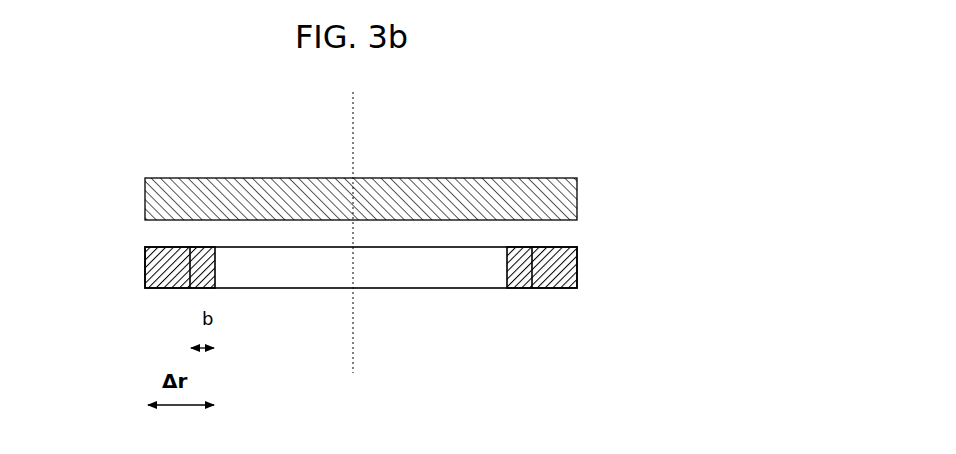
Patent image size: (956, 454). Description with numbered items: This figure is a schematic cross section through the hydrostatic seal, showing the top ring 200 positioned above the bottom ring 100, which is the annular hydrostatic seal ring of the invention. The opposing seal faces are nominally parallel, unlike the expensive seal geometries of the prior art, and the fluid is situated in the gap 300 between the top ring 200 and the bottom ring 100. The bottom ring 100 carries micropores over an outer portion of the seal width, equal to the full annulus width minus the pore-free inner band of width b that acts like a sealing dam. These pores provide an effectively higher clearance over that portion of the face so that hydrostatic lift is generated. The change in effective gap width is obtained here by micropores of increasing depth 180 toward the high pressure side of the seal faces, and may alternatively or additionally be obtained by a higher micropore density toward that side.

The bottom ring 100 is at (578, 273).
The micropores of increasing depth 180 is at (157, 246).
The top ring 200 is at (578, 190).
The gap 300 is at (550, 231).